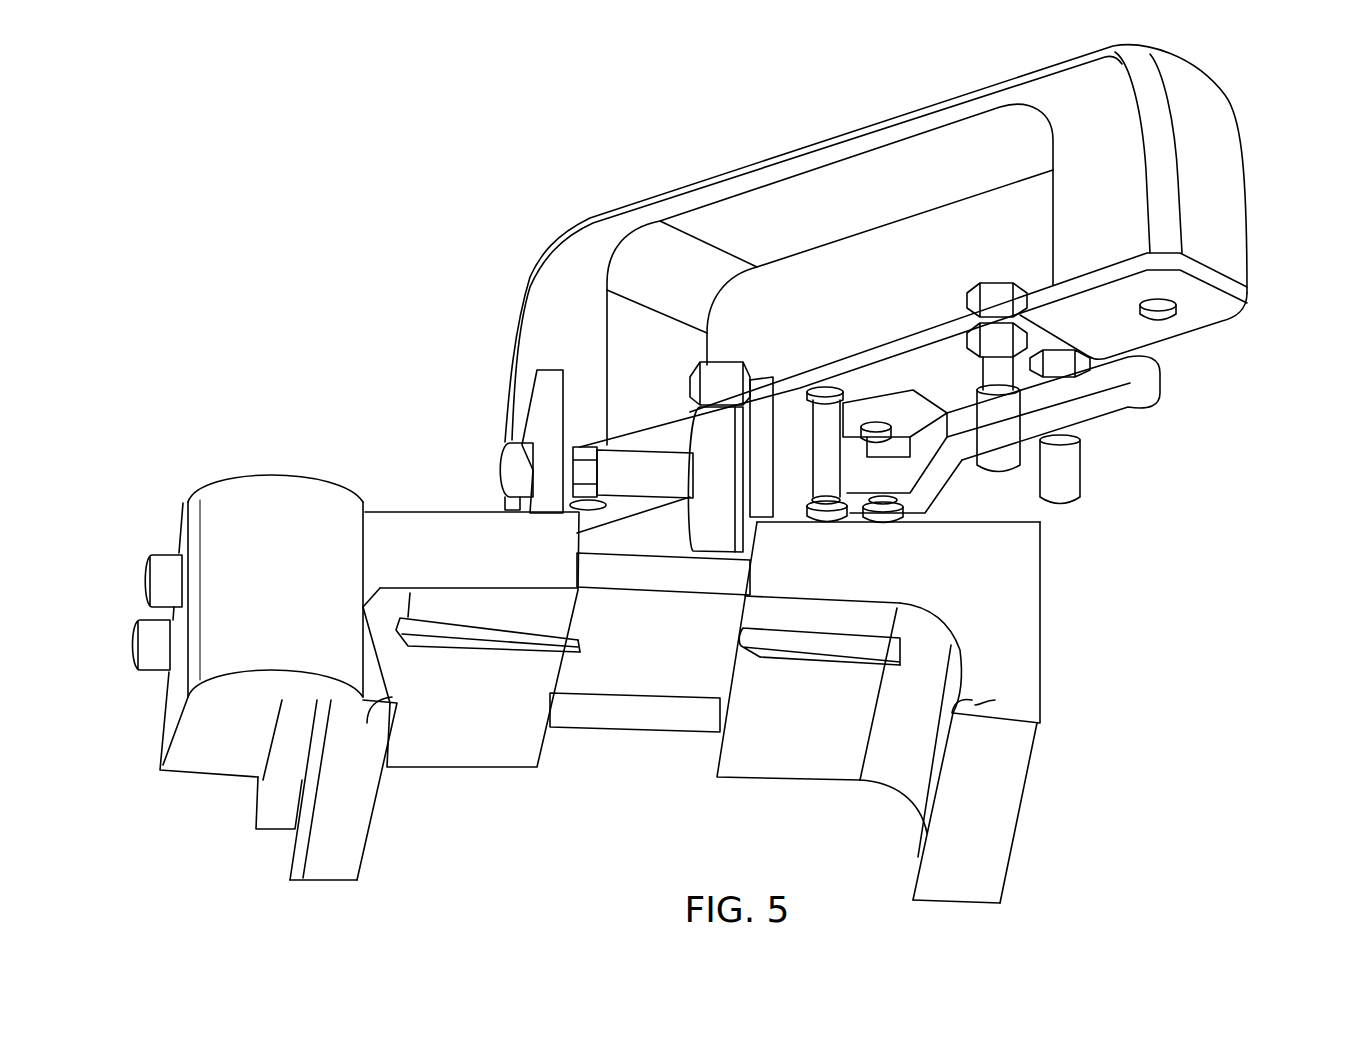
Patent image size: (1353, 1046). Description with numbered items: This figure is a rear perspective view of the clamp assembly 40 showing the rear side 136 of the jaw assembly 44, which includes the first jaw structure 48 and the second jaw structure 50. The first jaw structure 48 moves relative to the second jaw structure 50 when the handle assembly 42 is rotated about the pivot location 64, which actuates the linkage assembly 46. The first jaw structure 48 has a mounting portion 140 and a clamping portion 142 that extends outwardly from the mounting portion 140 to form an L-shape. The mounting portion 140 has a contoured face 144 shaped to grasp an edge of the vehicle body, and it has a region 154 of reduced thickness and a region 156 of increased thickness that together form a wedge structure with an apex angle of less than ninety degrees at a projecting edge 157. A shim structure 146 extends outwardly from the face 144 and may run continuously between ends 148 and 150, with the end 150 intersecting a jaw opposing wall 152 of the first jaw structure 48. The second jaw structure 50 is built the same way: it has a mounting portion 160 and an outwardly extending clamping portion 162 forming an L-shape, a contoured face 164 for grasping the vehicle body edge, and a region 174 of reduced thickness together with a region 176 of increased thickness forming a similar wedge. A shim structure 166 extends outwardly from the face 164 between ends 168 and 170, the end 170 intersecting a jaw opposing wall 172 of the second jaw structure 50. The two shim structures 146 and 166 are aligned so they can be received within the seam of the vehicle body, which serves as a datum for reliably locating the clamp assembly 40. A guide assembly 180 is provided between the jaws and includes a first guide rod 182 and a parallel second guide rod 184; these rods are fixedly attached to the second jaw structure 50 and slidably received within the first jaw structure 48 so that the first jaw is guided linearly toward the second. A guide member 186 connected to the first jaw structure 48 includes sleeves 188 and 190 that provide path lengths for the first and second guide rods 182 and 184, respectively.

The clamp assembly 40 is at (716, 504).
The handle assembly 42 is at (918, 287).
The jaw assembly 44 is at (918, 744).
The linkage assembly 46 is at (1003, 403).
The first jaw structure 48 is at (274, 658).
The second jaw structure 50 is at (1001, 933).
The pivot location 64 is at (727, 363).
The rear side 136 is at (512, 709).
The mounting portion 140 is at (497, 760).
The clamping portion 142 is at (343, 873).
The contoured face 144 is at (412, 601).
The shim structure 146 is at (497, 633).
The end 148 is at (400, 657).
The end 150 is at (578, 623).
The jaw opposing wall 152 is at (609, 643).
The region of reduced thickness 154 is at (387, 560).
The region of increased thickness 156 is at (237, 805).
The projecting edge 157 is at (380, 827).
The mounting portion 160 is at (790, 773).
The clamping portion 162 is at (1007, 820).
The contoured face 164 is at (893, 787).
The shim structure 166 is at (825, 650).
The end 168 is at (900, 647).
The end 170 is at (750, 636).
The jaw opposing wall 172 is at (745, 660).
The region of reduced thickness 174 is at (938, 558).
The region of increased thickness 176 is at (1047, 622).
The guide assembly 180 is at (650, 681).
The first guide rod 182 is at (673, 570).
The second guide rod 184 is at (643, 703).
The guide member 186 is at (274, 532).
The sleeve 188 is at (153, 558).
The sleeve 190 is at (140, 660).